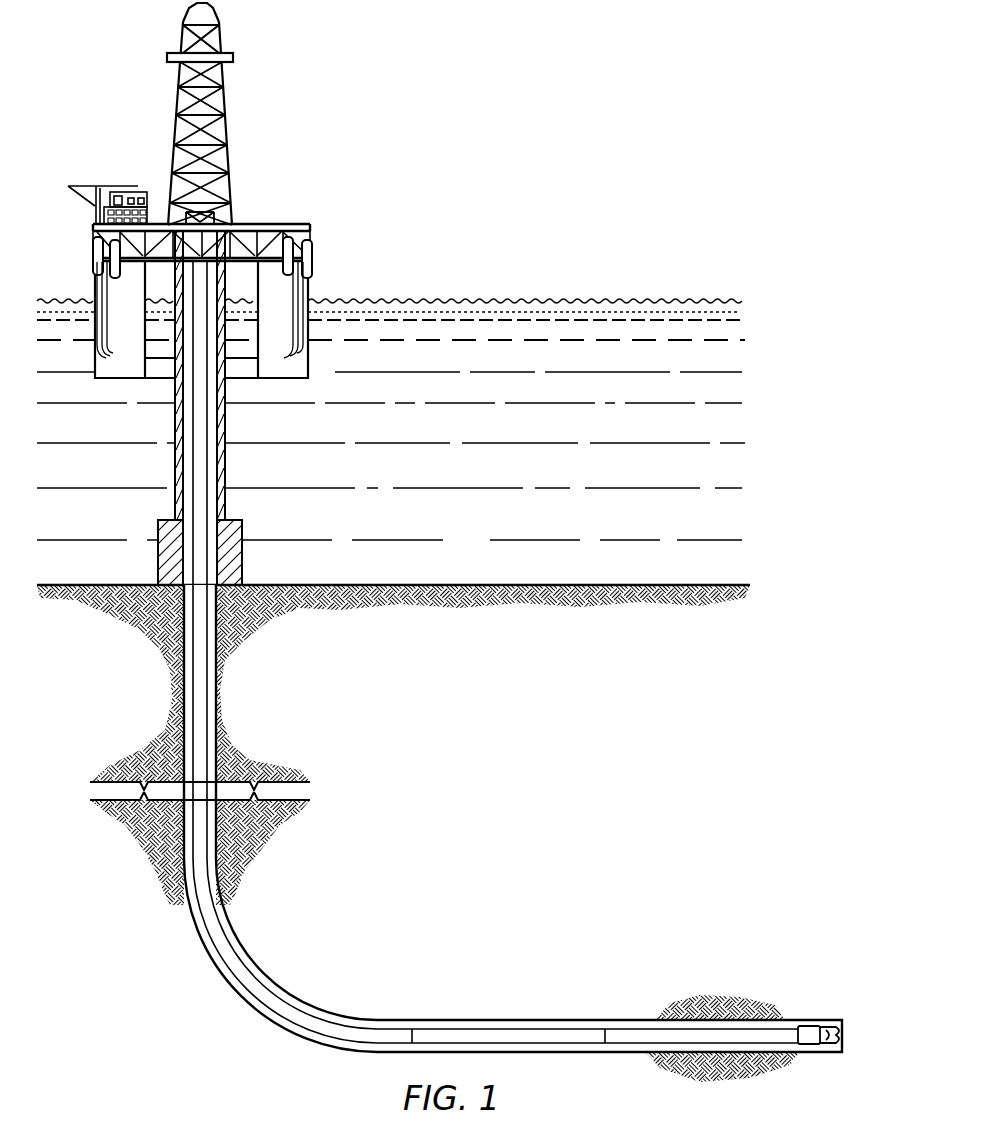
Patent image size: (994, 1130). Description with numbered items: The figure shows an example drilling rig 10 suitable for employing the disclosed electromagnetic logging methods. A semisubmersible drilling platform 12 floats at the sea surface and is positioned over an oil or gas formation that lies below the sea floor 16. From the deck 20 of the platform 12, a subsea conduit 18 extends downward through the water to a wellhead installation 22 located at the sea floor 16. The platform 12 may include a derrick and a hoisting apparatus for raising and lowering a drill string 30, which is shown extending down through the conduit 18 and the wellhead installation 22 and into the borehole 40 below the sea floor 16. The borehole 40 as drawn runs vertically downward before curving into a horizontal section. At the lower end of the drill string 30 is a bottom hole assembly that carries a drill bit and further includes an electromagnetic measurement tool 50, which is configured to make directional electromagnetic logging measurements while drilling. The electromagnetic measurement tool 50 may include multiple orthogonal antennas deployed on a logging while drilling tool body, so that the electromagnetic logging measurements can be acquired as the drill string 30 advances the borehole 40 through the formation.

The drilling rig 10 is at (312, 114).
The semisubmersible drilling platform 12 is at (296, 223).
The sea floor 16 is at (447, 585).
The subsea conduit 18 is at (225, 463).
The deck 20 is at (312, 255).
The wellhead installation 22 is at (240, 520).
The drill string 30 is at (200, 393).
The borehole 40 is at (190, 683).
The electromagnetic measurement tool 50 is at (460, 1028).